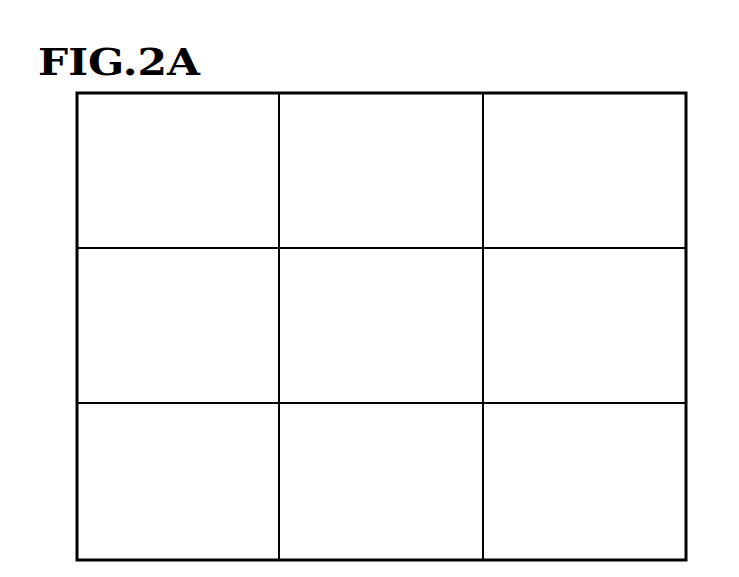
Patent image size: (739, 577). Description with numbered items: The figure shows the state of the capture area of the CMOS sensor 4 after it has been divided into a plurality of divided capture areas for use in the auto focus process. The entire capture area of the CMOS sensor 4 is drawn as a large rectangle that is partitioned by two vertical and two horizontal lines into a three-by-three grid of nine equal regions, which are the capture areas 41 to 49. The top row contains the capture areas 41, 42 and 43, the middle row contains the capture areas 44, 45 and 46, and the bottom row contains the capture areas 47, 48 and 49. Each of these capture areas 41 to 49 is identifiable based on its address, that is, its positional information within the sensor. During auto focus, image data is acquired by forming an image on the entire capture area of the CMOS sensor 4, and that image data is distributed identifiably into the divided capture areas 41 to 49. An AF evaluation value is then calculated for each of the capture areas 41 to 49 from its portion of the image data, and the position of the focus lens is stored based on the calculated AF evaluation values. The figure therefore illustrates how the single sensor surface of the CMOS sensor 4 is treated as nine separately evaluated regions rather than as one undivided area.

The CMOS sensor 4 is at (413, 93).
The capture area 41 is at (178, 170).
The capture area 42 is at (381, 170).
The capture area 43 is at (584, 170).
The capture area 44 is at (178, 325).
The capture area 45 is at (381, 325).
The capture area 46 is at (584, 325).
The capture area 47 is at (178, 481).
The capture area 48 is at (381, 481).
The capture area 49 is at (584, 481).